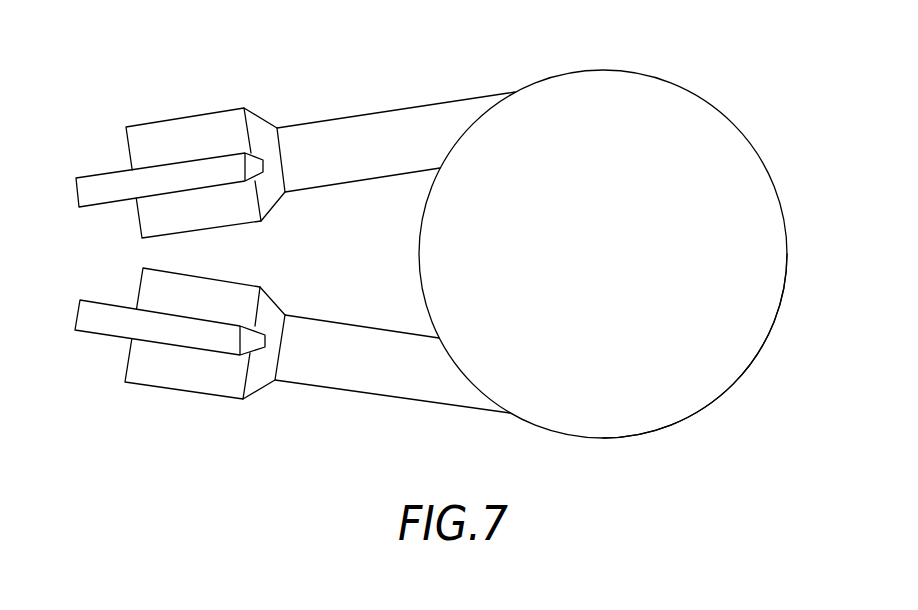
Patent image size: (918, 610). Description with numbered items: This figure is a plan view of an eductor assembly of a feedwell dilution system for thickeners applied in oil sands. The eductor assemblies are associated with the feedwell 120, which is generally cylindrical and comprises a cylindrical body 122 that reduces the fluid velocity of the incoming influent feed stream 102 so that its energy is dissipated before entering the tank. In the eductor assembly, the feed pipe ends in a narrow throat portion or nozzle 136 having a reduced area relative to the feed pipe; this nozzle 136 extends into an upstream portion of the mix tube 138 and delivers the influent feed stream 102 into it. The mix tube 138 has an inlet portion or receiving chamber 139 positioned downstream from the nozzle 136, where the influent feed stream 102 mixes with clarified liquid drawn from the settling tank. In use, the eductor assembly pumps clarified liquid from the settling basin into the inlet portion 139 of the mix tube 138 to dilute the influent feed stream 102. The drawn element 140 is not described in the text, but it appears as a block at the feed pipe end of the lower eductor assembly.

The influent feed stream 102 is at (93, 185).
The feedwell 120 is at (727, 93).
The cylindrical body 122 is at (710, 403).
The narrow throat portion or nozzle 136 is at (257, 355).
The mix tube 138 is at (438, 403).
The inlet portion 139 is at (270, 308).
The block 140 is at (170, 388).